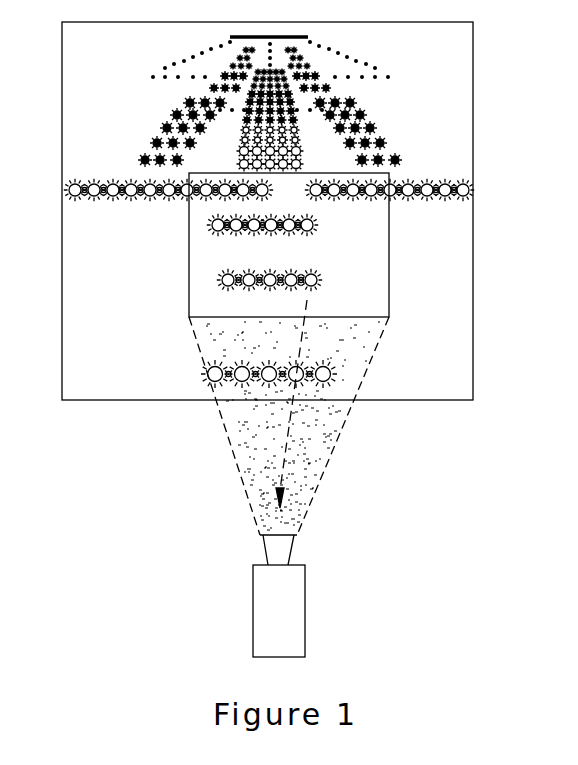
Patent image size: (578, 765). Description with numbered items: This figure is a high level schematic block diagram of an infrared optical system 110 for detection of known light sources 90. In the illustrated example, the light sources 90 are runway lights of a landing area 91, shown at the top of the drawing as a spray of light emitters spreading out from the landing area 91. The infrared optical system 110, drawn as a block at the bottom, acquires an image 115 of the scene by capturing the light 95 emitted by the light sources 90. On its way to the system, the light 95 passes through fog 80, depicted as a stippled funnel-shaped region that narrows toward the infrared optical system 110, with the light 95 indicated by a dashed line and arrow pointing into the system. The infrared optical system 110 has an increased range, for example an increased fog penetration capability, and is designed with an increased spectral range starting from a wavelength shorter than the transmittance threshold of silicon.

The landing area 91 is at (315, 62).
The light sources 90 is at (320, 270).
The image 115 is at (189, 260).
The fog 80 is at (248, 452).
The light 95 is at (290, 433).
The infrared optical system 110 is at (305, 595).